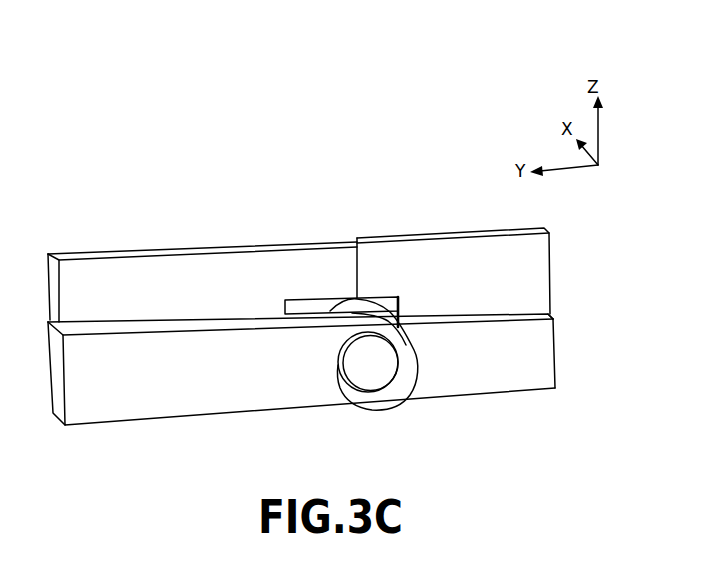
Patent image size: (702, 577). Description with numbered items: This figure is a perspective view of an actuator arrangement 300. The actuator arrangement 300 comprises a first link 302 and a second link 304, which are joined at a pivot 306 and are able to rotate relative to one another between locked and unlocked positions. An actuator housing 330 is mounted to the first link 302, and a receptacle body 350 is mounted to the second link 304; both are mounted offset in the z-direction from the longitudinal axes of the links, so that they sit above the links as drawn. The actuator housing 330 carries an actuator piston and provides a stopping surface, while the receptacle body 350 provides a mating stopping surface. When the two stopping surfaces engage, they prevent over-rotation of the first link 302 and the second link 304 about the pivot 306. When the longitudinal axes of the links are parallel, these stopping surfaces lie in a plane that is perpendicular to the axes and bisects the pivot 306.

The actuator arrangement 300 is at (381, 103).
The first link 302 is at (108, 417).
The second link 304 is at (528, 378).
The pivot 306 is at (376, 376).
The actuator housing 330 is at (216, 298).
The receptacle body 350 is at (490, 291).